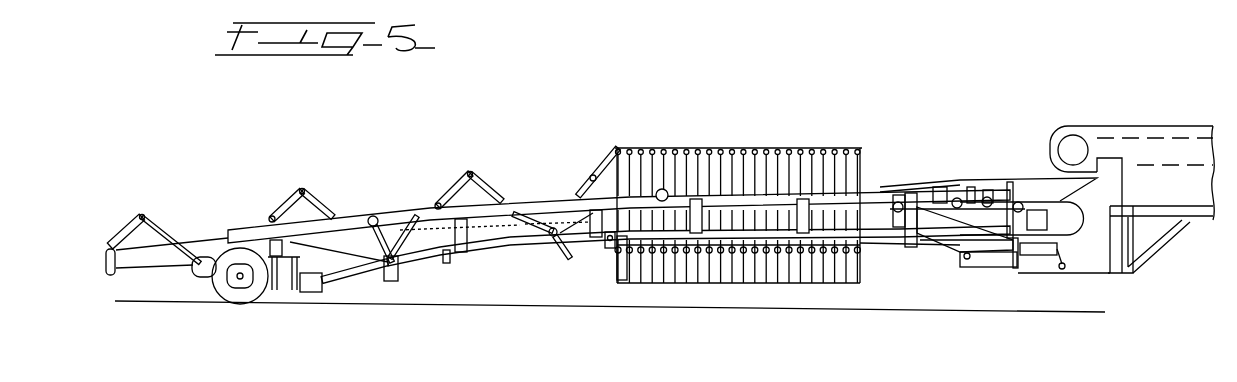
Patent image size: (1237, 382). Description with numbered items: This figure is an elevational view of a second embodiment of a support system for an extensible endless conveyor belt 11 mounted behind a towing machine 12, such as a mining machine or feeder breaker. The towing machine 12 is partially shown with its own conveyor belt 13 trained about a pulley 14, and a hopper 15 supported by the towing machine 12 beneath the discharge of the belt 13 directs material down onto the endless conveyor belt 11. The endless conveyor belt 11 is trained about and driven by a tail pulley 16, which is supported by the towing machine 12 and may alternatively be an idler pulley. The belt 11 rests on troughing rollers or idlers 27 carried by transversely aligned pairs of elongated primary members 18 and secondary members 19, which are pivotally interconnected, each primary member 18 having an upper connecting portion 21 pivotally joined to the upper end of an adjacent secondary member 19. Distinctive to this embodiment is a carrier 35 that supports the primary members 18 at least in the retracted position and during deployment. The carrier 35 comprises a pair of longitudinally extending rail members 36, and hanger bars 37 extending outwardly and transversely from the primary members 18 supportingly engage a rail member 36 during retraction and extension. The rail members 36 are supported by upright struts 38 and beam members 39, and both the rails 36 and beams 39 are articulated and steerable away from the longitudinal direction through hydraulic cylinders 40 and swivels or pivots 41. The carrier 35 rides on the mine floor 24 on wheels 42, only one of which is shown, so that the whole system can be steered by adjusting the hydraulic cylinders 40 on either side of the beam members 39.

The extensible endless conveyor belt 11 is at (196, 240).
The towing machine 12 is at (1159, 260).
The conveyor belt 13 is at (1125, 130).
The pulley 14 is at (1075, 147).
The hopper 15 is at (1008, 180).
The tail pulley 16 is at (1072, 228).
The elongated primary members 18 is at (490, 190).
The elongated secondary members 19 is at (439, 204).
The upper connecting portion 21 is at (303, 190).
The mine floor 24 is at (832, 312).
The troughing rollers or idlers 27 is at (141, 221).
The carrier 35 is at (570, 194).
The rail members 36 is at (900, 196).
The hanger bars 37 is at (270, 217).
The upright struts 38 is at (903, 215).
The beam members 39 is at (500, 256).
The hydraulic cylinders 40 is at (384, 283).
The swivels or pivots 41 is at (373, 216).
The wheels 42 is at (247, 303).